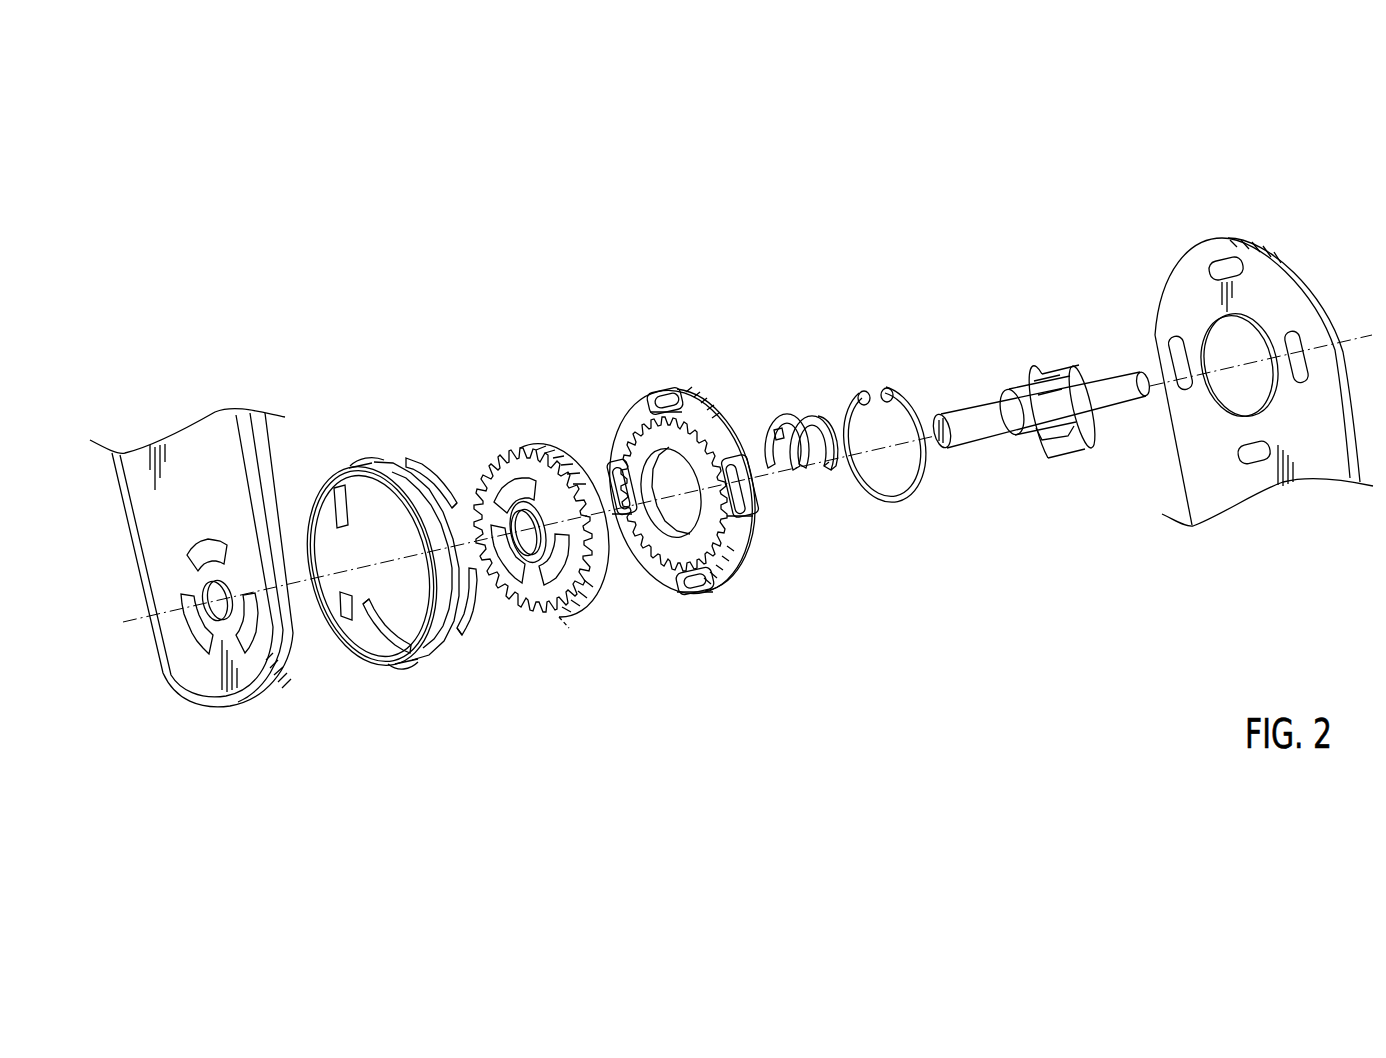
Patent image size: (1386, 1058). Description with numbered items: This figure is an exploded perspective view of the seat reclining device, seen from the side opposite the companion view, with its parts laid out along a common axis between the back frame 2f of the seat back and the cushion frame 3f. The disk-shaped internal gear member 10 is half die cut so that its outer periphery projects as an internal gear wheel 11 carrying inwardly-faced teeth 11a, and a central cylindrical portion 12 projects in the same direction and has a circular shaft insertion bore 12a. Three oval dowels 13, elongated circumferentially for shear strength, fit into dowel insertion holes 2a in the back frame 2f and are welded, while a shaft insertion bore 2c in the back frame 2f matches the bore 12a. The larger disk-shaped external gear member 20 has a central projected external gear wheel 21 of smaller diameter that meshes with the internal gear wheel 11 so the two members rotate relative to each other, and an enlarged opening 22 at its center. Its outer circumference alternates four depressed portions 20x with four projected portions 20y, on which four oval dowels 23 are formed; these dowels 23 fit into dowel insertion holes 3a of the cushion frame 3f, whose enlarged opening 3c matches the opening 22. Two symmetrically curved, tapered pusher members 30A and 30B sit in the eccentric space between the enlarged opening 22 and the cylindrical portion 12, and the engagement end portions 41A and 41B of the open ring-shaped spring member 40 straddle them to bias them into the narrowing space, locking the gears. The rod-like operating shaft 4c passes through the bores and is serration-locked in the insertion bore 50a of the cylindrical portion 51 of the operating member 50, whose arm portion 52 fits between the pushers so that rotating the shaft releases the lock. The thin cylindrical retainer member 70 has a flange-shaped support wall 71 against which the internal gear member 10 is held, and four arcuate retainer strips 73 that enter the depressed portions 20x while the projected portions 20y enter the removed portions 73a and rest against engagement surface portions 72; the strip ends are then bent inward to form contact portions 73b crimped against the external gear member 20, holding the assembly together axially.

The back frame 2f is at (190, 438).
The dowel insertion holes 2a is at (206, 547).
The shaft insertion bore 2c is at (220, 612).
The retainer member 70 is at (378, 554).
The support wall 71 is at (370, 660).
The engagement surface portions 72 is at (410, 460).
The retainer strips 73 is at (440, 475).
The removed portions 73a is at (365, 457).
The contact portions 73b is at (345, 512).
The internal gear member 10 is at (535, 528).
The internal gear wheel 11 is at (565, 455).
The inwardly-faced teeth 11a is at (569, 628).
The cylindrical portion 12 is at (518, 503).
The shaft insertion bore 12a is at (530, 547).
The dowels 13 is at (500, 480).
The external gear member 20 is at (700, 489).
The depressed portions 20x is at (712, 410).
The projected portions 20y is at (662, 393).
The external gear wheel 21 is at (640, 430).
The enlarged opening 22 is at (690, 520).
The dowels 23 is at (672, 398).
The pusher member 30A is at (818, 428).
The pusher member 30B is at (778, 425).
The spring member 40 is at (886, 446).
The engagement end portion 41A is at (890, 390).
The engagement end portion 41B is at (865, 391).
The operating shaft 4c is at (1120, 403).
The operating member 50 is at (1029, 399).
The insertion bore 50a is at (1006, 425).
The cylindrical portion 51 is at (1040, 398).
The arm portion 52 is at (1052, 442).
The cushion frame 3f is at (1264, 358).
The dowel insertion holes 3a is at (1224, 262).
The enlarged opening 3c is at (1245, 367).